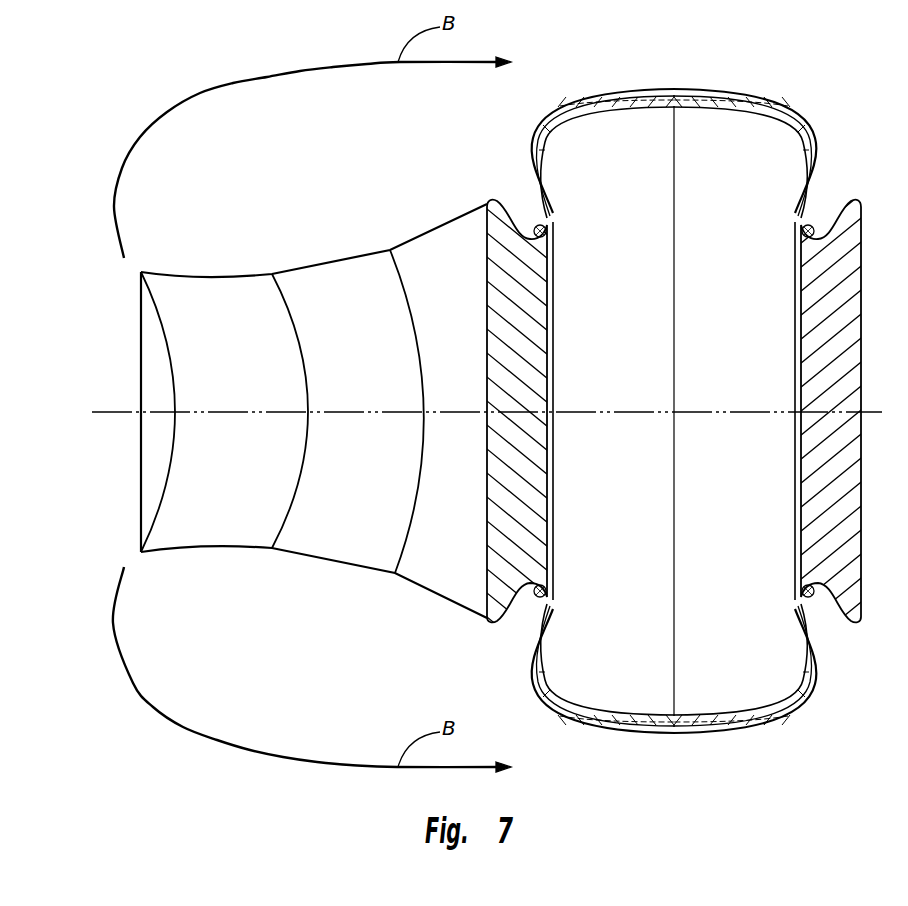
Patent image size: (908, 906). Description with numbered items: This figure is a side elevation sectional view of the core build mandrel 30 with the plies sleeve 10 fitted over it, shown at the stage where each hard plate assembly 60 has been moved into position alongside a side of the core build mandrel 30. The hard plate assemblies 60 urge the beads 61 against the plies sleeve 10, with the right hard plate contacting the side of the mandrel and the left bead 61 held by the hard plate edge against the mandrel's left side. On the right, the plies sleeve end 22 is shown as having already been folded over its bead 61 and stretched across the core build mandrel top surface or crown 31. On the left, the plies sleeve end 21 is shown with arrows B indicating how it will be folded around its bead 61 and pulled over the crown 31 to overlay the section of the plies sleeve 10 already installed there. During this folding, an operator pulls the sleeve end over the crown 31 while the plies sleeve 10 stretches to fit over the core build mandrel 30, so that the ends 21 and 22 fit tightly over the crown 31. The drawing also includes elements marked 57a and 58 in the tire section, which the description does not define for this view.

The plies sleeve 10 is at (338, 560).
The plies sleeve end 21 is at (140, 548).
The plies sleeve end 22 is at (542, 118).
The core build mandrel 30 is at (732, 364).
The core build mandrel top surface or crown 31 is at (680, 106).
The bead portion 57a is at (553, 251).
The belt layer 58 is at (706, 100).
The hard plate assembly 60 is at (517, 245).
The bead 61 is at (553, 216).